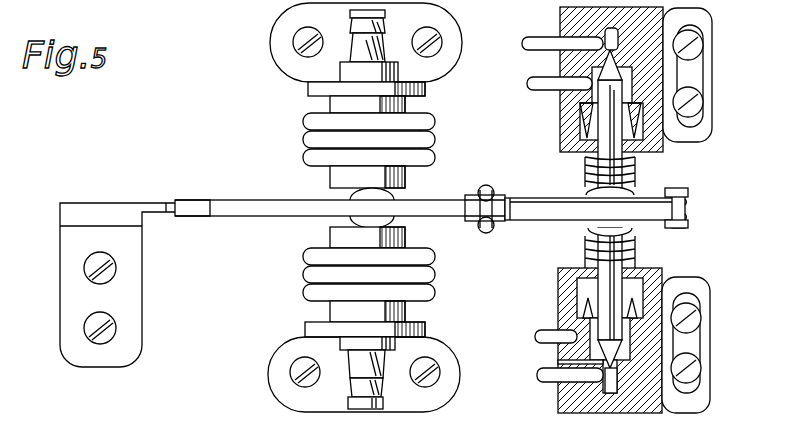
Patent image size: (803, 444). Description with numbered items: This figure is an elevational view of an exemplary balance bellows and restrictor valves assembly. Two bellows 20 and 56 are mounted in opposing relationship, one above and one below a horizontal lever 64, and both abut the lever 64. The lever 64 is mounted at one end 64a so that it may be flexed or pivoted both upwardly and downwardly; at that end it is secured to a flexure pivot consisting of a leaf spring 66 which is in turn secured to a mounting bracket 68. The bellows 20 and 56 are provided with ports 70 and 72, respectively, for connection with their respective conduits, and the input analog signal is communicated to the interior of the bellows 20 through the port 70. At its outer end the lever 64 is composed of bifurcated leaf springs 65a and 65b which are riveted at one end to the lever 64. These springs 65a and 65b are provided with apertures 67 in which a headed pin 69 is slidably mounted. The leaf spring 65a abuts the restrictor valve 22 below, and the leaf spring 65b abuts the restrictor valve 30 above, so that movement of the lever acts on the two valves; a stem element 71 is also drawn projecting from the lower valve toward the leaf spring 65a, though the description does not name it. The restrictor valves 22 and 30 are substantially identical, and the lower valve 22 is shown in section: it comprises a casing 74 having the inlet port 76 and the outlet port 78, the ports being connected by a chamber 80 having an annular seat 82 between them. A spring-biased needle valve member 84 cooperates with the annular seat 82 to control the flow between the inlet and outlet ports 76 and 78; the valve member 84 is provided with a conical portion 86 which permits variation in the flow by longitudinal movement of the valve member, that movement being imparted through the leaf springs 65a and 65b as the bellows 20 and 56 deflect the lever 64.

The bellows 20 is at (301, 277).
The restrictor valve 22 is at (662, 290).
The restrictor valve 30 is at (566, 19).
The bellows 56 is at (301, 118).
The lever 64 is at (263, 200).
The end of lever 64a is at (180, 200).
The leaf spring 65a is at (527, 221).
The leaf spring 65b is at (537, 197).
The leaf spring 66 is at (166, 213).
The apertures 67 is at (690, 194).
The mounting bracket 68 is at (66, 297).
The headed pin 69 is at (694, 212).
The port 70 is at (384, 410).
The plunger 71 is at (628, 247).
The port 72 is at (383, 27).
The casing 74 is at (628, 413).
The inlet port 76 is at (565, 378).
The outlet port 78 is at (553, 330).
The chamber 80 is at (627, 357).
The annular seat 82 is at (622, 350).
The needle valve member 84 is at (600, 286).
The conical portion 86 is at (560, 362).